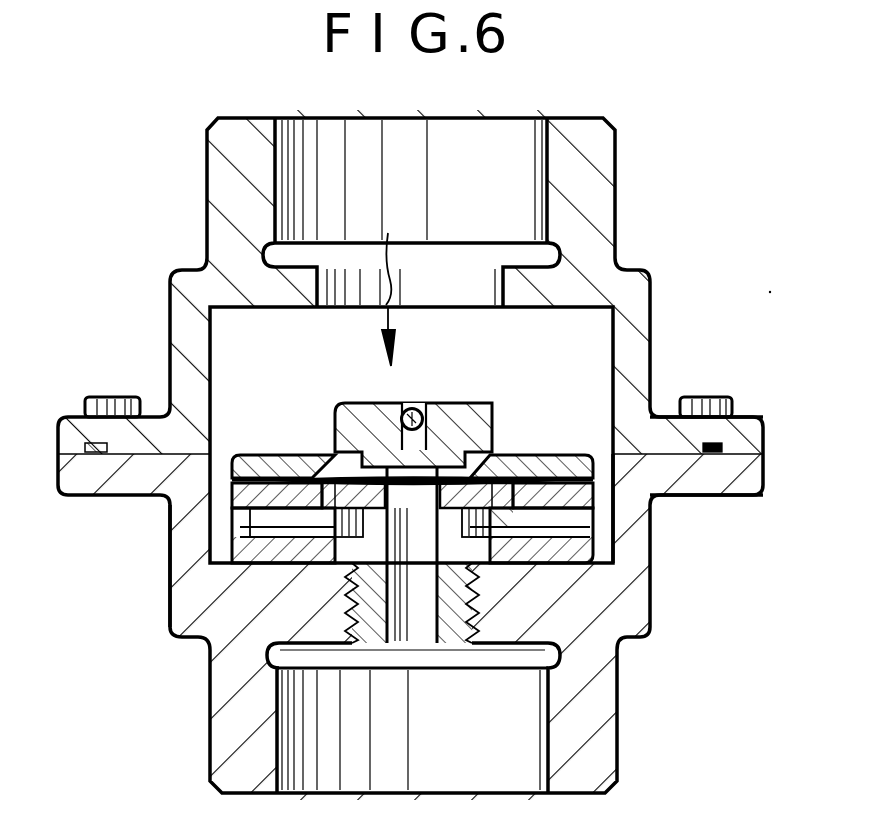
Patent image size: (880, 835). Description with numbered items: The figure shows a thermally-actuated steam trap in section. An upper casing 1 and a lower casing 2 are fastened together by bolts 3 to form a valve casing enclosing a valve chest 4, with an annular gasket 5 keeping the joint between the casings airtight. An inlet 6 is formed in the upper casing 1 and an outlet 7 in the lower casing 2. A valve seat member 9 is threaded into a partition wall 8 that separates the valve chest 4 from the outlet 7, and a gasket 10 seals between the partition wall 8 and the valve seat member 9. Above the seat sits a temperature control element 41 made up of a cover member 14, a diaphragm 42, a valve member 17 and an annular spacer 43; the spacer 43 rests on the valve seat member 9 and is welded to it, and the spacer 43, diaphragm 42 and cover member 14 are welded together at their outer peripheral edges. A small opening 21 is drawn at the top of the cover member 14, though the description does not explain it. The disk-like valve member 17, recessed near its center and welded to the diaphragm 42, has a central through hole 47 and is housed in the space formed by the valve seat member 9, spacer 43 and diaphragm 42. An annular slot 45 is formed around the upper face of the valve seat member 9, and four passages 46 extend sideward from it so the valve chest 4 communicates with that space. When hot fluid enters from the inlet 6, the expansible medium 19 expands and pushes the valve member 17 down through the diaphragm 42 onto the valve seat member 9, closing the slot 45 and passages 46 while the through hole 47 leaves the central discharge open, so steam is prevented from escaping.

The upper casing 1 is at (583, 183).
The lower casing 2 is at (588, 731).
The bolts 3 is at (115, 397).
The valve chest 4 is at (565, 330).
The annular gasket 5 is at (718, 447).
The inlet 6 is at (352, 172).
The outlet 7 is at (456, 760).
The partition wall 8 is at (258, 625).
The valve seat member 9 is at (590, 567).
The gasket 10 is at (352, 570).
The cover member 14 is at (350, 440).
The valve member 17 is at (495, 490).
The expansible medium 19 is at (367, 422).
The hole 21 is at (415, 410).
The temperature control element 41 is at (384, 282).
The diaphragm 42 is at (305, 478).
The annular spacer 43 is at (548, 490).
The annular slot 45 is at (345, 521).
The passages 46 is at (285, 543).
The through hole 47 is at (414, 540).